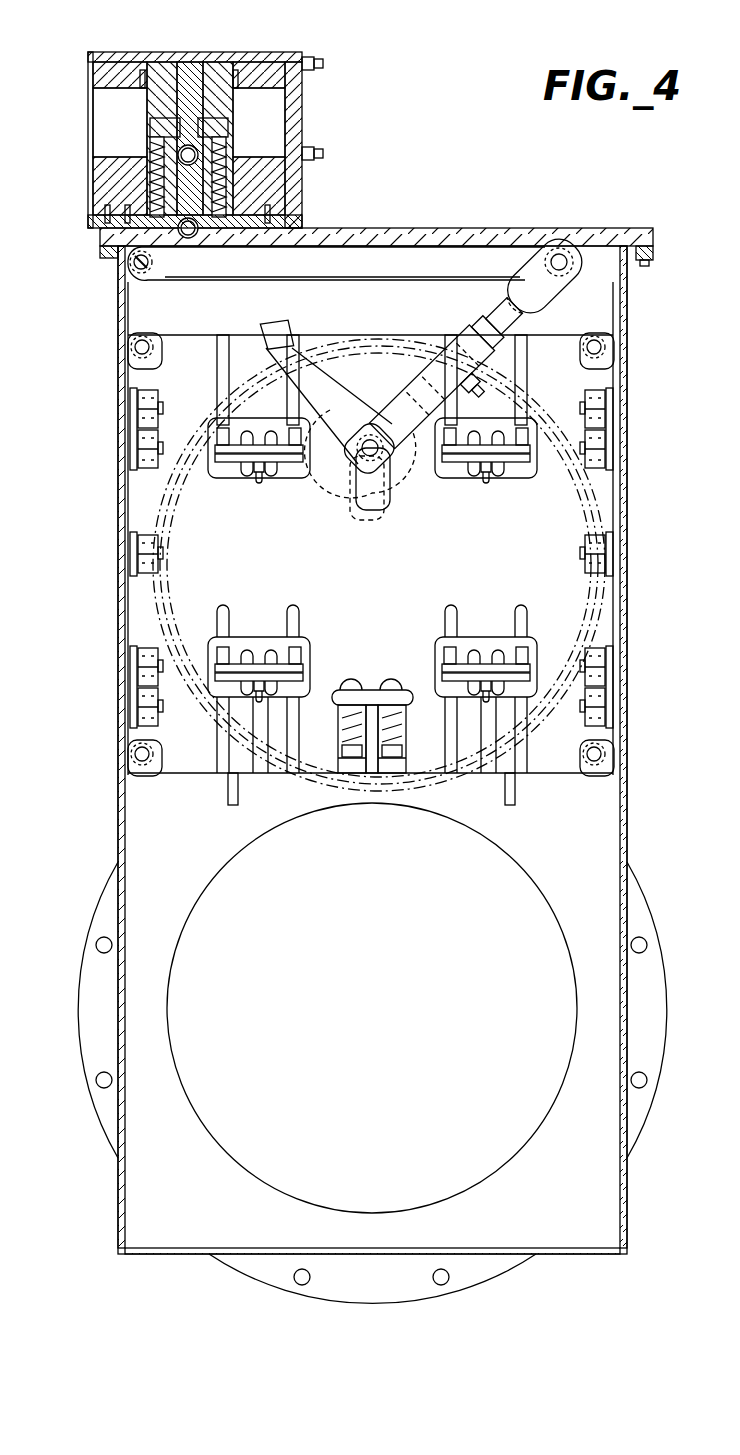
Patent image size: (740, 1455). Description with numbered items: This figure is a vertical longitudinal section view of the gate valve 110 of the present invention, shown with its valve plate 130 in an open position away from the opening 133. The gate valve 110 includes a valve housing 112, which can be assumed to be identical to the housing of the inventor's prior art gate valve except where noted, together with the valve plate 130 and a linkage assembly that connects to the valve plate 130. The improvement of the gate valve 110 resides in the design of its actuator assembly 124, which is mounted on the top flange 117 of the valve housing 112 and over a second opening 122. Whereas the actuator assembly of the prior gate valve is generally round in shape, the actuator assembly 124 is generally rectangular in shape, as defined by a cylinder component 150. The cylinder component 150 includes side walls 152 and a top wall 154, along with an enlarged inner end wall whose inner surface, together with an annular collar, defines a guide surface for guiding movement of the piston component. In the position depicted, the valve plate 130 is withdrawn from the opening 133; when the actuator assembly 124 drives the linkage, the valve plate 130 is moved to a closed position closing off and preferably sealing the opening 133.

The gate valve 110 is at (436, 108).
The valve housing 112 is at (627, 382).
The top flange 117 is at (440, 230).
The second opening 122 is at (207, 246).
The actuator assembly 124 is at (210, 40).
The valve plate 130 is at (600, 512).
The opening 133 is at (500, 885).
The cylinder component 150 is at (120, 50).
The side walls 152 is at (304, 118).
The top wall 154 is at (272, 52).